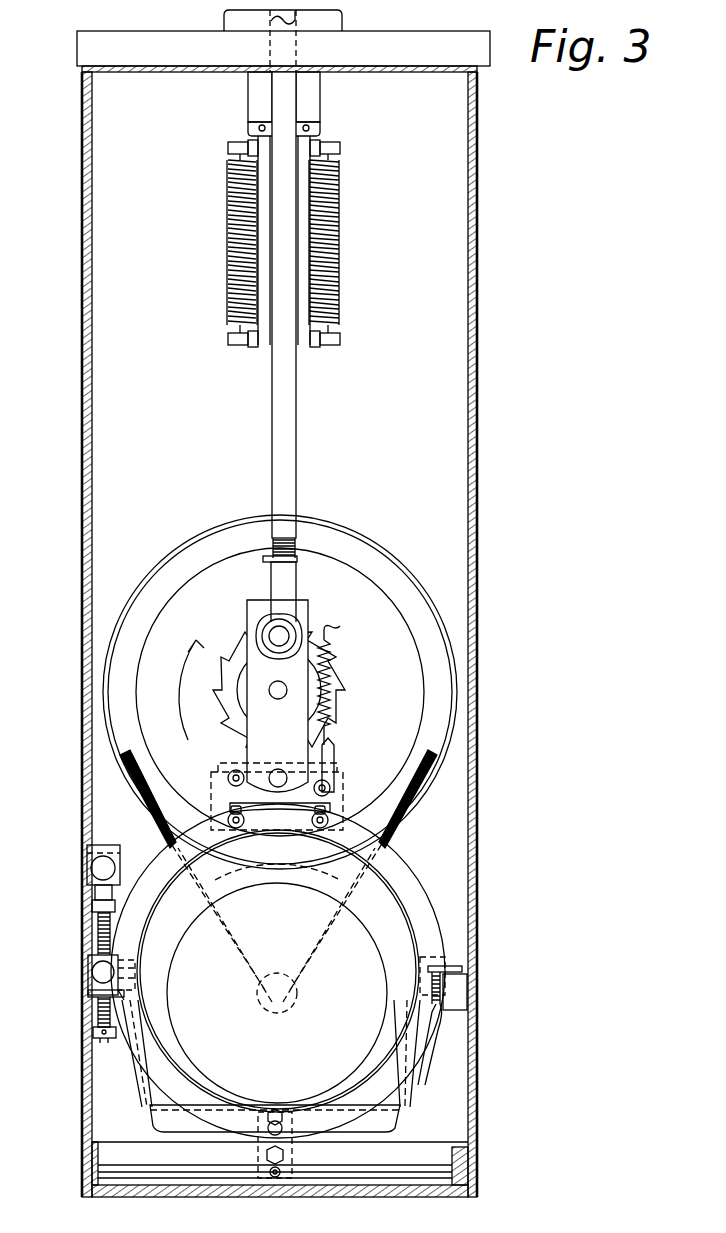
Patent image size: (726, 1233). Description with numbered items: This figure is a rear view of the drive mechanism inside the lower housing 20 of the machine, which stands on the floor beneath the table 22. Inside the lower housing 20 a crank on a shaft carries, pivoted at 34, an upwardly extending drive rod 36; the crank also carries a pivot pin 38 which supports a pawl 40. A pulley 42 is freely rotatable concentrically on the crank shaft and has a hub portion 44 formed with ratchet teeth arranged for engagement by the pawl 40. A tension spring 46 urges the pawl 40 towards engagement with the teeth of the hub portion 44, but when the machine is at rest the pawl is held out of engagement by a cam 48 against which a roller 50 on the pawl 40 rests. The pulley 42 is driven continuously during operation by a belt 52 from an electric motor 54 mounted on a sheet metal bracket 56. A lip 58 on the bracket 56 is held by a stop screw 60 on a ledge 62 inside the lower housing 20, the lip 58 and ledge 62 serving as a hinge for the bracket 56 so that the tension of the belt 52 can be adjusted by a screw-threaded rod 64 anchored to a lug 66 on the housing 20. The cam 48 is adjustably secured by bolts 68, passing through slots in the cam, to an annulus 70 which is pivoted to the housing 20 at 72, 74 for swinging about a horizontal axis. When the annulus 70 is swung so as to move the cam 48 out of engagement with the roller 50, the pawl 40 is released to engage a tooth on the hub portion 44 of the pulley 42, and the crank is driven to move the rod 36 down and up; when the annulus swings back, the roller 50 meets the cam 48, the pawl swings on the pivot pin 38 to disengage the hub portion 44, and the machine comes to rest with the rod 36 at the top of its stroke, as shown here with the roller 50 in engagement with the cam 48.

The lower housing 20 is at (477, 580).
The table 22 is at (80, 31).
The pivot 34 is at (283, 634).
The drive rod 36 is at (299, 472).
The pivot pin 38 is at (292, 776).
The pawl 40 is at (336, 761).
The pulley 42 is at (410, 601).
The hub portion 44 is at (338, 673).
The tension spring 46 is at (346, 706).
The cam 48 is at (338, 797).
The roller 50 is at (232, 772).
The belt 52 is at (405, 831).
The electric motor 54 is at (355, 1010).
The sheet metal bracket 56 is at (405, 1119).
The lip 58 is at (438, 1012).
The stop screw 60 is at (468, 999).
The ledge 62 is at (435, 1044).
The screw-threaded rod 64 is at (92, 943).
The lug 66 is at (112, 866).
The bolts 68 is at (300, 838).
The annulus 70 is at (412, 890).
The pivot 72 is at (88, 976).
The pivot 74 is at (452, 966).